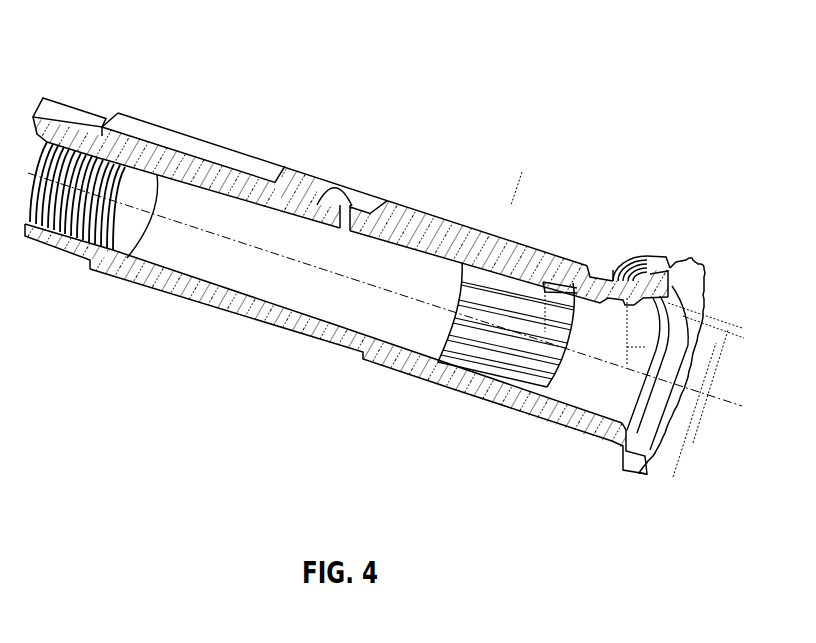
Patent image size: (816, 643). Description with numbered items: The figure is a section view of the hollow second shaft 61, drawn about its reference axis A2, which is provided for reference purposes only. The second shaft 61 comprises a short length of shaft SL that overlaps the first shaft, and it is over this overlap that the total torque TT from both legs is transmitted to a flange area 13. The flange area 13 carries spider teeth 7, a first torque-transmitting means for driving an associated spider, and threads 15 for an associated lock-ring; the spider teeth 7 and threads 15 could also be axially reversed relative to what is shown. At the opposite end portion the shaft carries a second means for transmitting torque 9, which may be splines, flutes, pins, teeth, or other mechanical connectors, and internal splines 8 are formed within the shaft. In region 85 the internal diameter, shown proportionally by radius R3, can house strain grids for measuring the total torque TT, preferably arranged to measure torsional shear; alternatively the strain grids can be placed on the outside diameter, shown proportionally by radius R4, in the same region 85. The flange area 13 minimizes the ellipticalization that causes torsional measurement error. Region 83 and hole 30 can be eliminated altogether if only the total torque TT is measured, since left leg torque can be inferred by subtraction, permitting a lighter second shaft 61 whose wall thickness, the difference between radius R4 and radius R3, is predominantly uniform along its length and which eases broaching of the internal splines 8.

The second means for transmitting torque 9 is at (82, 108).
The second shaft 61 is at (318, 92).
The hole 30 is at (337, 223).
The region 83 is at (328, 350).
The flange area 13 is at (616, 454).
The internal splines 8 is at (520, 353).
The region 85 is at (588, 270).
The threads 15 is at (643, 250).
The spider teeth 7 is at (667, 248).
The total torque TT is at (630, 221).
The short length of shaft SL is at (595, 324).
The axis A2 is at (725, 364).
The radius (internal diameter) R3 is at (693, 443).
The radius (outside diameter) R4 is at (673, 477).